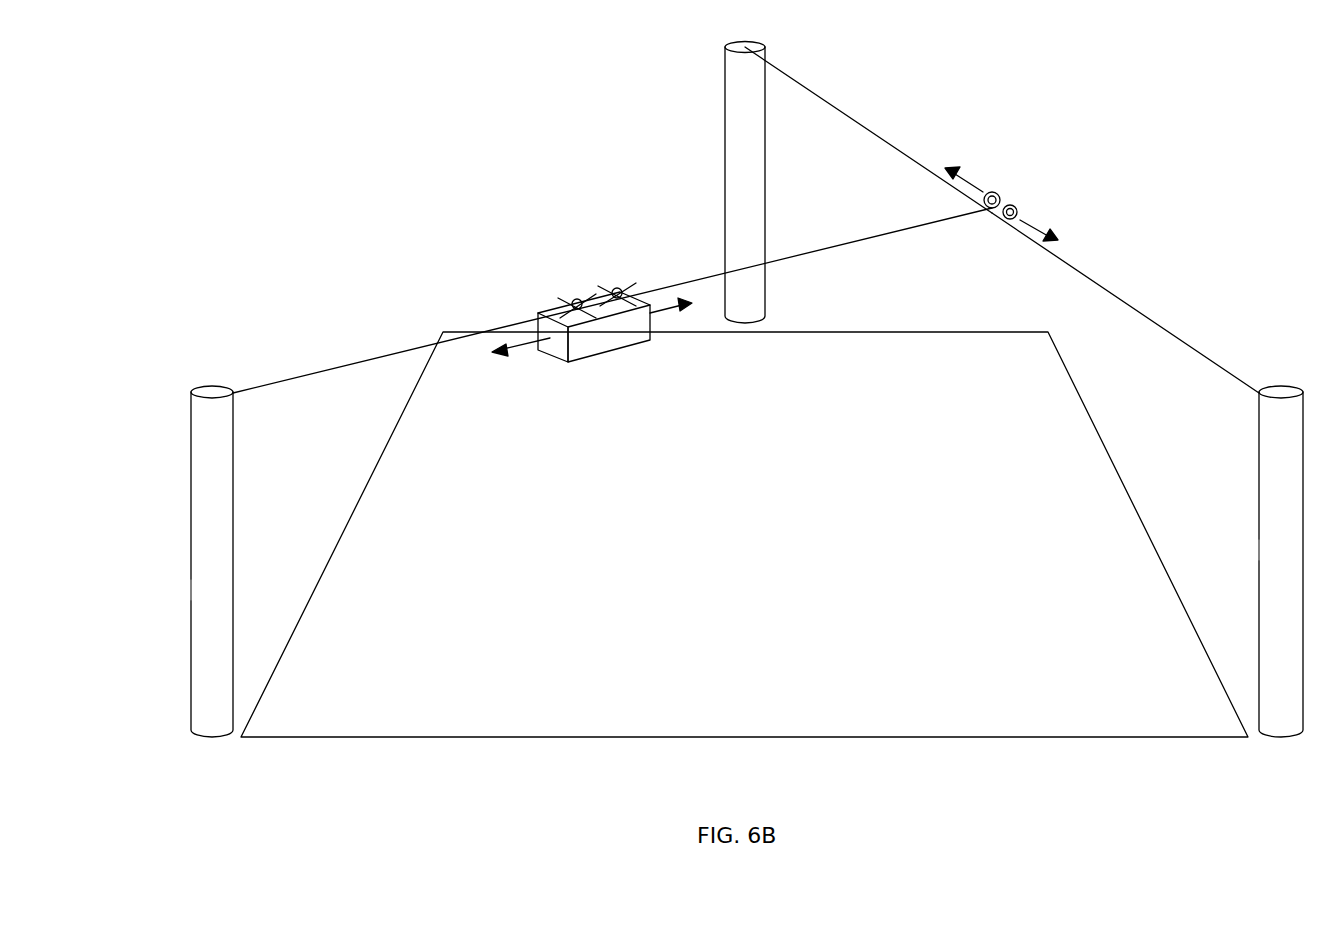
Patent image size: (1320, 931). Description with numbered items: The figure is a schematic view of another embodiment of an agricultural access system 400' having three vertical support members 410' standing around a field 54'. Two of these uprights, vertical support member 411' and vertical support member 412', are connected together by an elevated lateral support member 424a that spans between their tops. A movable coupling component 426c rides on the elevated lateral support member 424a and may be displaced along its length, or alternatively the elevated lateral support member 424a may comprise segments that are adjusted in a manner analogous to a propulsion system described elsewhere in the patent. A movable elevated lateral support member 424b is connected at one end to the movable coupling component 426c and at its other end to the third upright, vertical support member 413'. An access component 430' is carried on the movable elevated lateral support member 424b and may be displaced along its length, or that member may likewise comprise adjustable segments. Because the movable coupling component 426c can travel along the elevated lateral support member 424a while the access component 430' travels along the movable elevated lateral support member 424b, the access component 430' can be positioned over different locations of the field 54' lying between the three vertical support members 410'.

The agricultural access system 400' is at (255, 87).
The vertical support members 410' is at (747, 390).
The vertical support member 411' is at (868, 130).
The vertical support member 412' is at (1231, 530).
The vertical support member 413' is at (251, 569).
The elevated lateral support member 424a is at (1135, 303).
The movable elevated lateral support member 424b is at (352, 362).
The movable coupling component 426c is at (1017, 200).
The access component 430' is at (592, 342).
The field 54' is at (744, 549).